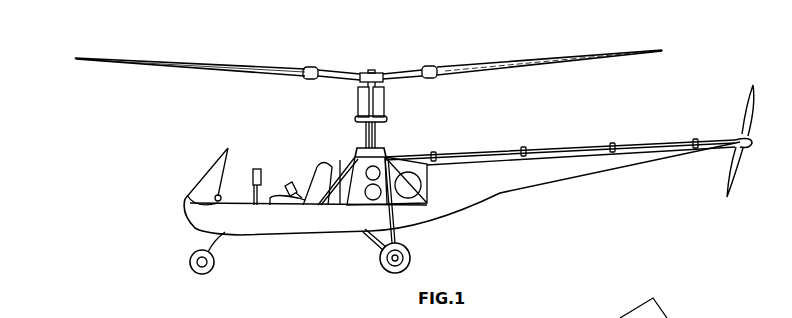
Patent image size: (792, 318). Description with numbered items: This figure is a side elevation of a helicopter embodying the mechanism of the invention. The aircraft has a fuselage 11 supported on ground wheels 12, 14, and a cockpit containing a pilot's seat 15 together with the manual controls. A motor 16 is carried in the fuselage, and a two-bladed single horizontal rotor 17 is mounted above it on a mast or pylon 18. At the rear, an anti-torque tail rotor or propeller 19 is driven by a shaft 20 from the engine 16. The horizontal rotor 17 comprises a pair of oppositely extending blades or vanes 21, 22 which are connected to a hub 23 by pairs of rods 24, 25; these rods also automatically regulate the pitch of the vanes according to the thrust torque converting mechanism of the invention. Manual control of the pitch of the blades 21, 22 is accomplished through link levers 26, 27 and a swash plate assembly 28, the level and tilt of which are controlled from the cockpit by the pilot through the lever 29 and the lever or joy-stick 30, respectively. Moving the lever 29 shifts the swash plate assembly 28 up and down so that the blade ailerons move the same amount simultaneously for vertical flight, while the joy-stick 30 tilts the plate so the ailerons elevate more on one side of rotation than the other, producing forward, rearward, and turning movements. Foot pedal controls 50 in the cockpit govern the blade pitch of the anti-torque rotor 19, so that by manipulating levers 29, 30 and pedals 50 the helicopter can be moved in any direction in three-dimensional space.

The fuselage 11 is at (482, 193).
The ground wheel 12 is at (210, 266).
The ground wheel 14 is at (410, 258).
The pilot's seat 15 is at (325, 163).
The motor 16 is at (345, 205).
The two-bladed single horizontal rotor 17 is at (434, 66).
The mast or pylon 18 is at (378, 130).
The anti-torque tail rotor or propeller 19 is at (750, 106).
The shaft 20 is at (560, 148).
The blade or vane 21 is at (187, 66).
The blade or vane 22 is at (528, 60).
The hub 23 is at (370, 71).
The pair of rods 24 is at (330, 70).
The pair of rods 25 is at (397, 70).
The link lever 26 is at (358, 101).
The link lever 27 is at (384, 101).
The swash plate assembly 28 is at (387, 119).
The lever 29 is at (293, 183).
The lever or joy-stick 30 is at (257, 168).
The foot pedal controls 50 is at (188, 212).